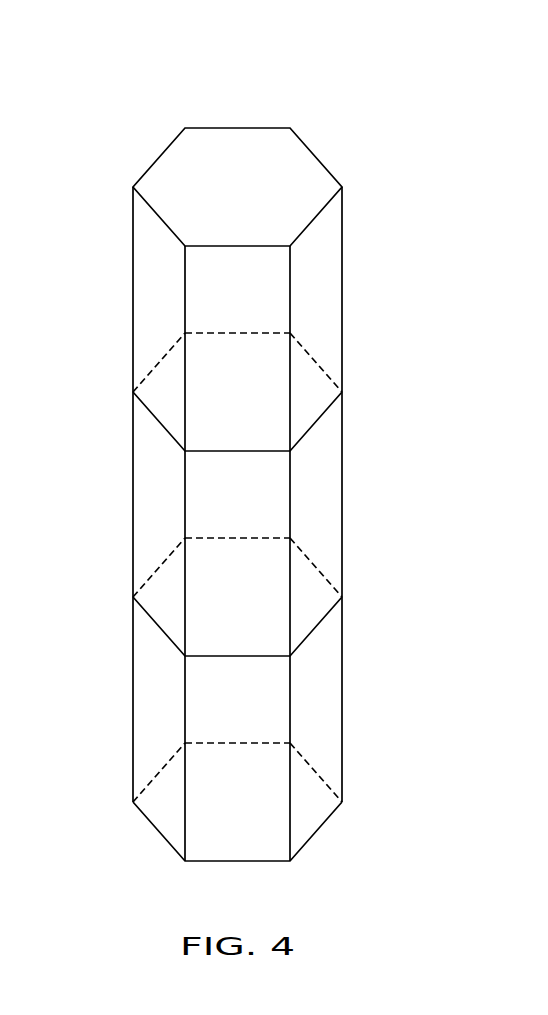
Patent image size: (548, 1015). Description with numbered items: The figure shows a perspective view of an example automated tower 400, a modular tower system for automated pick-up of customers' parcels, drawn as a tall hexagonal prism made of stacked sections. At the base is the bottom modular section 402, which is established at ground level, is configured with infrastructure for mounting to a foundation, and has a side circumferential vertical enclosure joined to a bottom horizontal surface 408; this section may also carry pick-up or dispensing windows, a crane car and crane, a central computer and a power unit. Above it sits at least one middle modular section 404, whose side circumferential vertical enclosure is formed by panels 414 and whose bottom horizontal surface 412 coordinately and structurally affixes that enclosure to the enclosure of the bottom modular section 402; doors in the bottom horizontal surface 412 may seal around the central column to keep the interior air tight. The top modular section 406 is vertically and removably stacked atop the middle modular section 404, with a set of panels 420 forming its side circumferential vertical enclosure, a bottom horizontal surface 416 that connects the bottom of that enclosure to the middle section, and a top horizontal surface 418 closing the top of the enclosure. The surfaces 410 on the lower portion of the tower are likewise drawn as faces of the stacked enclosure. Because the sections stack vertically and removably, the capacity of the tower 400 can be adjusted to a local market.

The tower 400 is at (112, 71).
The bottom modular section 402 is at (360, 774).
The middle modular section 404 is at (360, 458).
The top modular section 406 is at (360, 237).
The bottom horizontal surface 408 is at (168, 815).
The side faces of bottom segment 410 is at (152, 693).
The bottom horizontal surface 412 is at (303, 592).
The panels 414 is at (152, 503).
The bottom horizontal surface 416 is at (167, 383).
The top horizontal surface 418 is at (300, 165).
The panels 420 is at (152, 282).